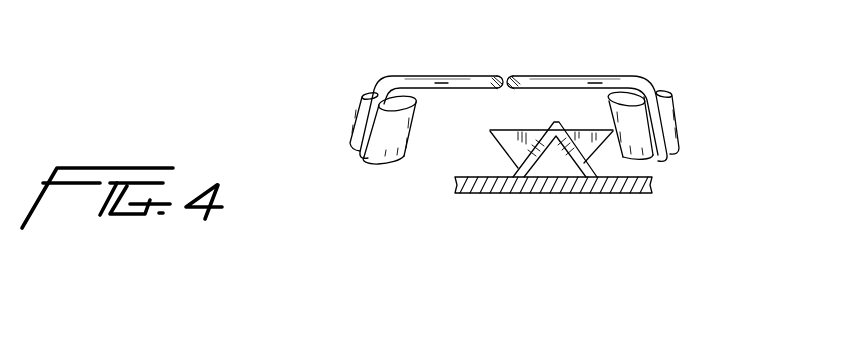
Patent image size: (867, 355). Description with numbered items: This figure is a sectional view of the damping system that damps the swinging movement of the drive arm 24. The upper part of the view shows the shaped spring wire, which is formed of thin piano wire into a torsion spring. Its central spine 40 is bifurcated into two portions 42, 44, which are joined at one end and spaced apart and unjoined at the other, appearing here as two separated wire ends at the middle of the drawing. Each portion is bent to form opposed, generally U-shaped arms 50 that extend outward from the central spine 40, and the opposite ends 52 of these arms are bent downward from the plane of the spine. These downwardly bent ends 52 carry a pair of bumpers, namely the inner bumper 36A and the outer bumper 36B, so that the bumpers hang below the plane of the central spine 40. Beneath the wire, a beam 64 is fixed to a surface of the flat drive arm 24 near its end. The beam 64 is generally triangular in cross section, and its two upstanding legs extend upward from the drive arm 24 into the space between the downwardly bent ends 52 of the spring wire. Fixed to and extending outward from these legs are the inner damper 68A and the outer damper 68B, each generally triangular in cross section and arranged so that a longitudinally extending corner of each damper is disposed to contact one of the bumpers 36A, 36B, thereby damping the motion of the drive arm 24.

The drive arm 24 is at (643, 195).
The inner bumper 36A is at (655, 163).
The outer bumper 36B is at (373, 162).
The central spine 40 is at (527, 63).
The portion of bifurcated spine 42 is at (484, 75).
The portion of bifurcated spine 44 is at (543, 76).
The U-shaped arm 50 is at (420, 72).
The opposite end of U-shaped arm 52 is at (355, 134).
The beam 64 is at (480, 195).
The inner damper 68A is at (598, 142).
The outer damper 68B is at (491, 133).